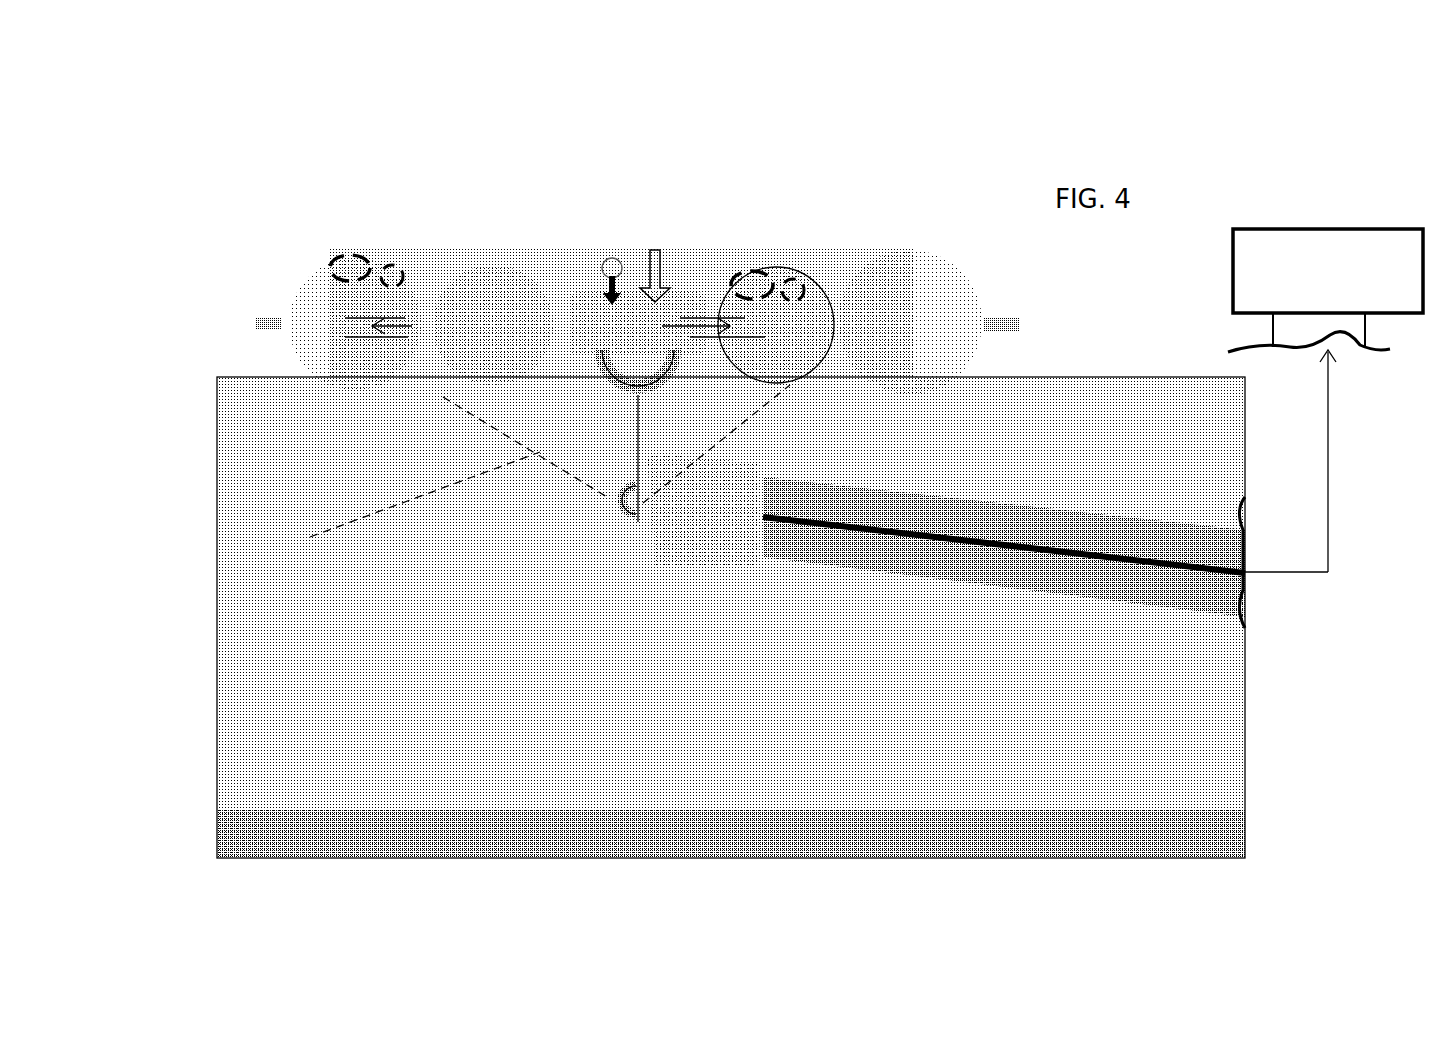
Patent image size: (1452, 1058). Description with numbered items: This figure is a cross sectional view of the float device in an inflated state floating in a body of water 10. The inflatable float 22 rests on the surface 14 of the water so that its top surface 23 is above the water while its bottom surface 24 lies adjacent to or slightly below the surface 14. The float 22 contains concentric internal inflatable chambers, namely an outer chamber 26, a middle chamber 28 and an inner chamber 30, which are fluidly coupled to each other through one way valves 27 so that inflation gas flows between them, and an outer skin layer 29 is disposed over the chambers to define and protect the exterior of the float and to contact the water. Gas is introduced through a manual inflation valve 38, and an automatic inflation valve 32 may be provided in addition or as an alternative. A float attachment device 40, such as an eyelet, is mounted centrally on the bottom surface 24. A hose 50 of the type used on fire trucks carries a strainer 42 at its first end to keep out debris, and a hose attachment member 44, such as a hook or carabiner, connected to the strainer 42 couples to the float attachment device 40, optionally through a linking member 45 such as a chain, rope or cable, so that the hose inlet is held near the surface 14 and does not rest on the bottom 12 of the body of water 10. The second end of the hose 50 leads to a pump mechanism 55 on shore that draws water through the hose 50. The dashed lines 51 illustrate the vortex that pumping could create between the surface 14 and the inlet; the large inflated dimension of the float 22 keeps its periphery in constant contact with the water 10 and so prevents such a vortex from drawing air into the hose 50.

The body of water 10 is at (330, 700).
The bottom of the body of water 12 is at (498, 832).
The surface of the water 14 is at (1115, 380).
The inflatable float 22 is at (835, 268).
The top surface 23 is at (720, 247).
The bottom surface 24 is at (790, 385).
The outer chamber 26 is at (317, 270).
The one way valves 27 is at (668, 323).
The middle chamber 28 is at (497, 308).
The outer skin layer 29 is at (917, 247).
The inner chamber 30 is at (590, 300).
The automatic inflation valve 32 is at (348, 272).
The manual inflation valve 38 is at (392, 258).
The float attachment device 40 is at (613, 383).
The strainer 42 is at (685, 505).
The hose attachment member 44 is at (610, 500).
The linking member 45 is at (638, 440).
The hose 50 is at (848, 555).
The dashed lines 51 is at (431, 479).
The pump mechanism 55 is at (1328, 275).